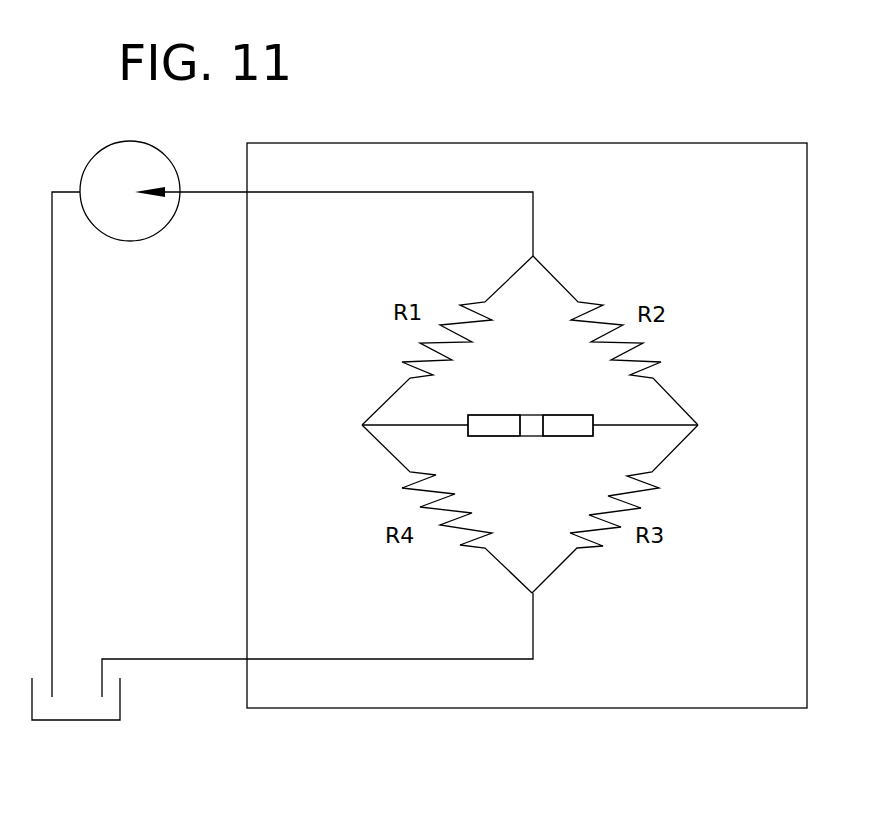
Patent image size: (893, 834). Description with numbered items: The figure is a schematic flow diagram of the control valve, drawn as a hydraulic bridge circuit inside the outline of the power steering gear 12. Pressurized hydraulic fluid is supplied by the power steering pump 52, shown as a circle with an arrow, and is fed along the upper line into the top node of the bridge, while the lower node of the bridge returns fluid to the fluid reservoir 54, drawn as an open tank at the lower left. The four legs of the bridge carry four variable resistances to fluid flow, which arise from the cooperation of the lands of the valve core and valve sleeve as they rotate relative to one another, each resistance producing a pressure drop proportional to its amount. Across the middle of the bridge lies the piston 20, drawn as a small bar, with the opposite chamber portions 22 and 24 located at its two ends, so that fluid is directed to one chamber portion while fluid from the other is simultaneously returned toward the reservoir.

The power steering gear 12 is at (641, 127).
The piston 20 is at (535, 437).
The chamber portion 22 is at (483, 437).
The chamber portion 24 is at (572, 437).
The power steering pump 52 is at (143, 163).
The fluid reservoir 54 is at (73, 714).